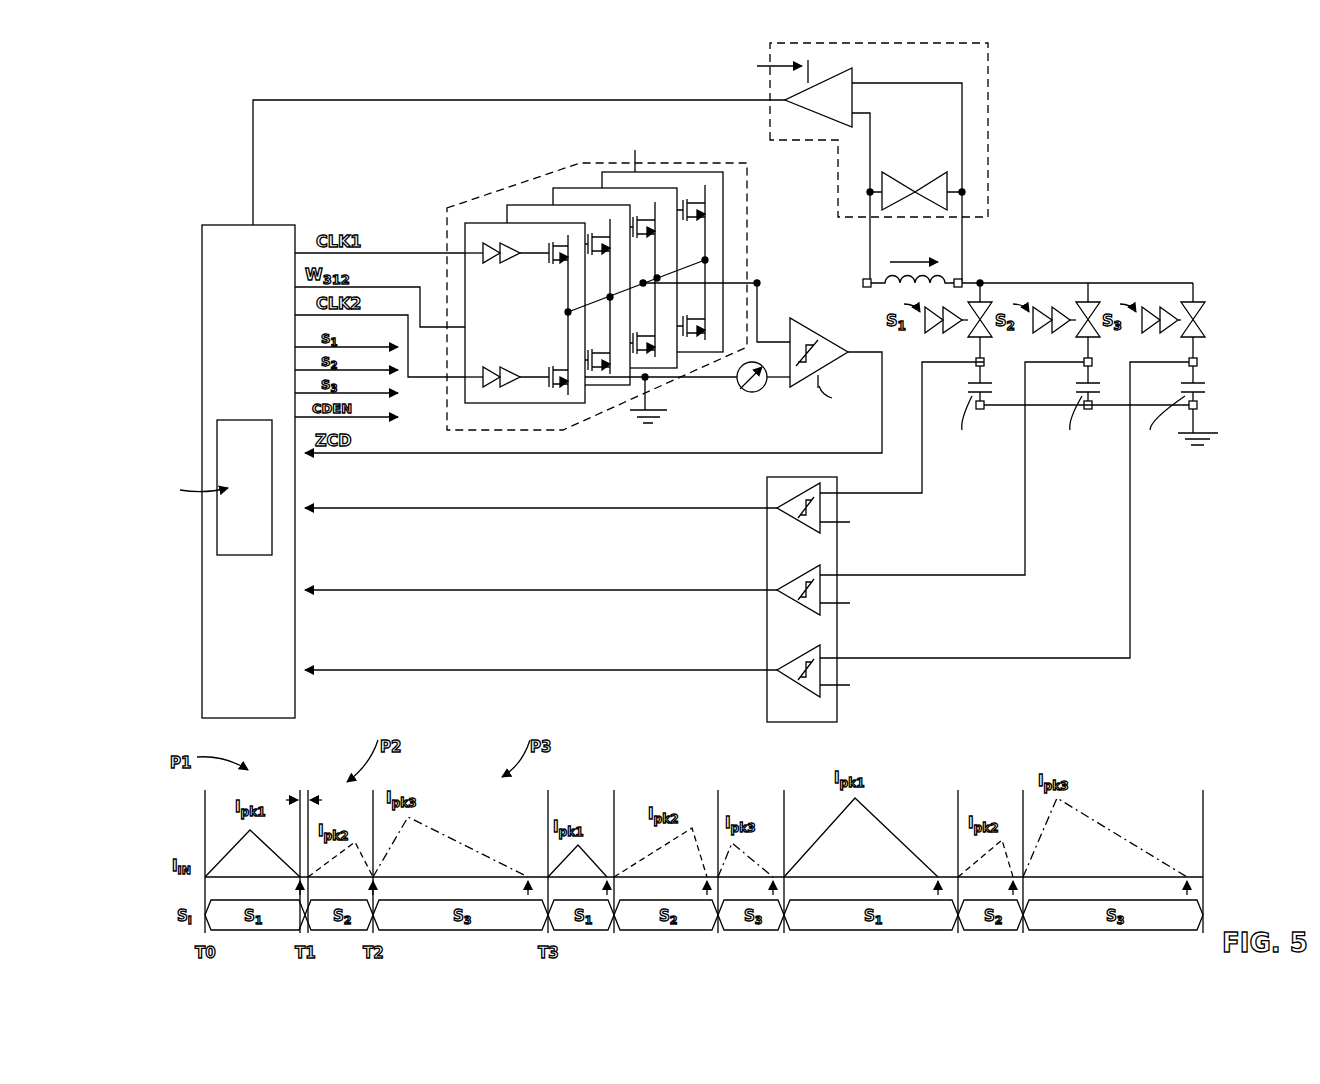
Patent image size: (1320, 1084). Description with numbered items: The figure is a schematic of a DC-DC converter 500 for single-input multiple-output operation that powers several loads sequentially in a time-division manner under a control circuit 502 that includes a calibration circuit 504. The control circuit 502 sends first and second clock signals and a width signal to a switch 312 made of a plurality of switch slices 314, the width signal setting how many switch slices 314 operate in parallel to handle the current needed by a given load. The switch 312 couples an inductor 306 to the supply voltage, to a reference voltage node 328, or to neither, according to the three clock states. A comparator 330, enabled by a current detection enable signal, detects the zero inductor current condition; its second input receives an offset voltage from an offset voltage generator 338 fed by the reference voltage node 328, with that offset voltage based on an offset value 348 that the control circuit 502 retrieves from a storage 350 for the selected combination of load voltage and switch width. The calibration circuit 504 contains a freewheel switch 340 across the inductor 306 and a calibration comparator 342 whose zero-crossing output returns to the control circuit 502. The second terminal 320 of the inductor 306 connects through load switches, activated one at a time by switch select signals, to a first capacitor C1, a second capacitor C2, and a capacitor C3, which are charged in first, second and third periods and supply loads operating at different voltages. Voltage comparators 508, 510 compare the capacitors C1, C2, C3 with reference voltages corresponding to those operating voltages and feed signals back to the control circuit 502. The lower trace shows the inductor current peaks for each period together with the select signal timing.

The DC-DC converter 500 is at (1124, 150).
The control circuit 502 is at (202, 284).
The switch circuit 312 is at (500, 192).
The switch slice 314 is at (570, 400).
The reference voltage node 328 is at (668, 414).
The comparator 330 is at (814, 342).
The offset voltage generator 338 is at (746, 393).
The freewheel switch 340 is at (920, 183).
The calibration comparator 342 is at (848, 74).
The offset value 348 is at (178, 488).
The storage 350 is at (217, 446).
The calibration circuit 504 is at (990, 92).
The inductor 306 is at (864, 280).
The second terminal 320 is at (963, 279).
The voltage comparator 508 is at (767, 478).
The voltage comparators 510 is at (790, 660).
The first capacitor C1 is at (970, 401).
The second capacitor C2 is at (1077, 401).
The capacitor C3 is at (1170, 401).